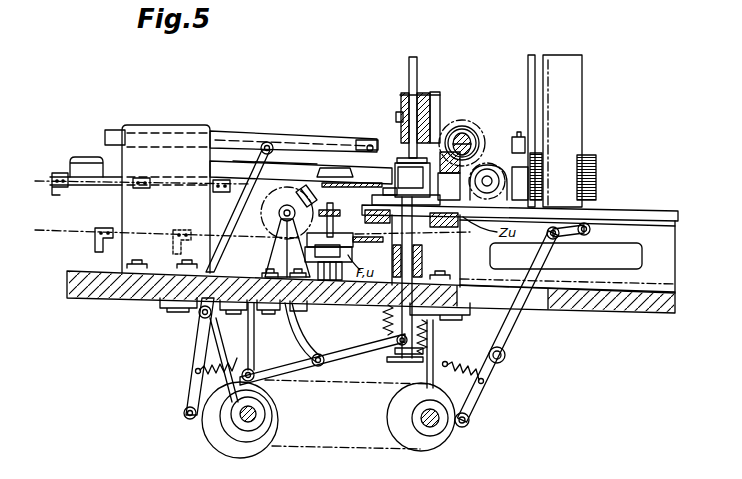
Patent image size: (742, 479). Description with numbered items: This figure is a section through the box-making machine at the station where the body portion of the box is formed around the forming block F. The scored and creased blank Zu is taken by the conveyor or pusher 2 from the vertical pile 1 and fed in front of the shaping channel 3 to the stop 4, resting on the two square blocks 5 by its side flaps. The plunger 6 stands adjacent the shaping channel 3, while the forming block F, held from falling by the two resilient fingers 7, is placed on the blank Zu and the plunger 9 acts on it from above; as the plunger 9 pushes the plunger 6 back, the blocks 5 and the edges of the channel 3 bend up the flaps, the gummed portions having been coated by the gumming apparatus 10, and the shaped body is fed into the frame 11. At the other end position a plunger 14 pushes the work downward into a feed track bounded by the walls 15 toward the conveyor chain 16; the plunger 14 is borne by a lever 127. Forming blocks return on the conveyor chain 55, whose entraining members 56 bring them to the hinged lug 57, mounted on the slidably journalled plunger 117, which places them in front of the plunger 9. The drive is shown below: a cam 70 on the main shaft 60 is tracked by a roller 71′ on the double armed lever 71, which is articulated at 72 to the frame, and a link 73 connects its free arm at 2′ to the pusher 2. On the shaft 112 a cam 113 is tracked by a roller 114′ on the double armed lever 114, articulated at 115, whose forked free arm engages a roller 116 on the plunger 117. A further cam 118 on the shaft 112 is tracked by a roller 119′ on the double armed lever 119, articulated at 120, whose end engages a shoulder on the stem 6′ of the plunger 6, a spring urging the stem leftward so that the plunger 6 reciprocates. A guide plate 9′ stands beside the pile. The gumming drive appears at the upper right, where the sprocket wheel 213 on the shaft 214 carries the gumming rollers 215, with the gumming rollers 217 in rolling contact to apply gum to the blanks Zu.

The vertical pile 1 is at (582, 82).
The conveyor 2 is at (600, 212).
The connection point of link to pusher 2′ is at (587, 234).
The shaping channel 3 is at (420, 217).
The stop 4 is at (385, 193).
The square blocks 5 is at (450, 223).
The plunger 6 is at (365, 218).
The stem of plunger 6′ is at (427, 255).
The resilient fingers 7 is at (398, 165).
The plunger 9 is at (400, 113).
The guide plate 9′ is at (403, 95).
The gumming apparatus 10 is at (462, 122).
The frame 11 is at (309, 200).
The plunger 14 is at (350, 239).
The walls 15 is at (352, 250).
The conveyor chain 16 is at (330, 281).
The conveyor chain 55 is at (45, 236).
The entraining members 56 is at (55, 190).
The hinged lug 57 is at (365, 142).
The main shaft 60 is at (430, 433).
The cam 70 is at (388, 407).
The double armed lever 71 is at (523, 327).
The roller 71′ is at (475, 420).
The articulation point 72 is at (512, 352).
The link 73 is at (565, 238).
The shaft 112 is at (260, 417).
The cam 113 is at (203, 427).
The double armed lever 114 is at (197, 337).
The roller 114′ is at (187, 413).
The articulation point 115 is at (195, 313).
The roller 116 is at (270, 148).
The plunger 117 is at (115, 133).
The cam 118 is at (227, 442).
The double armed lever 119 is at (295, 377).
The roller 119′ is at (237, 357).
The articulation point 120 is at (322, 367).
The lever 127 is at (333, 214).
The sprocket wheel 213 is at (457, 130).
The shaft 214 is at (472, 133).
The gumming rollers 215 is at (455, 130).
The gumming rollers 217 is at (492, 163).
The forming block F is at (73, 157).
The blank Zu is at (597, 155).